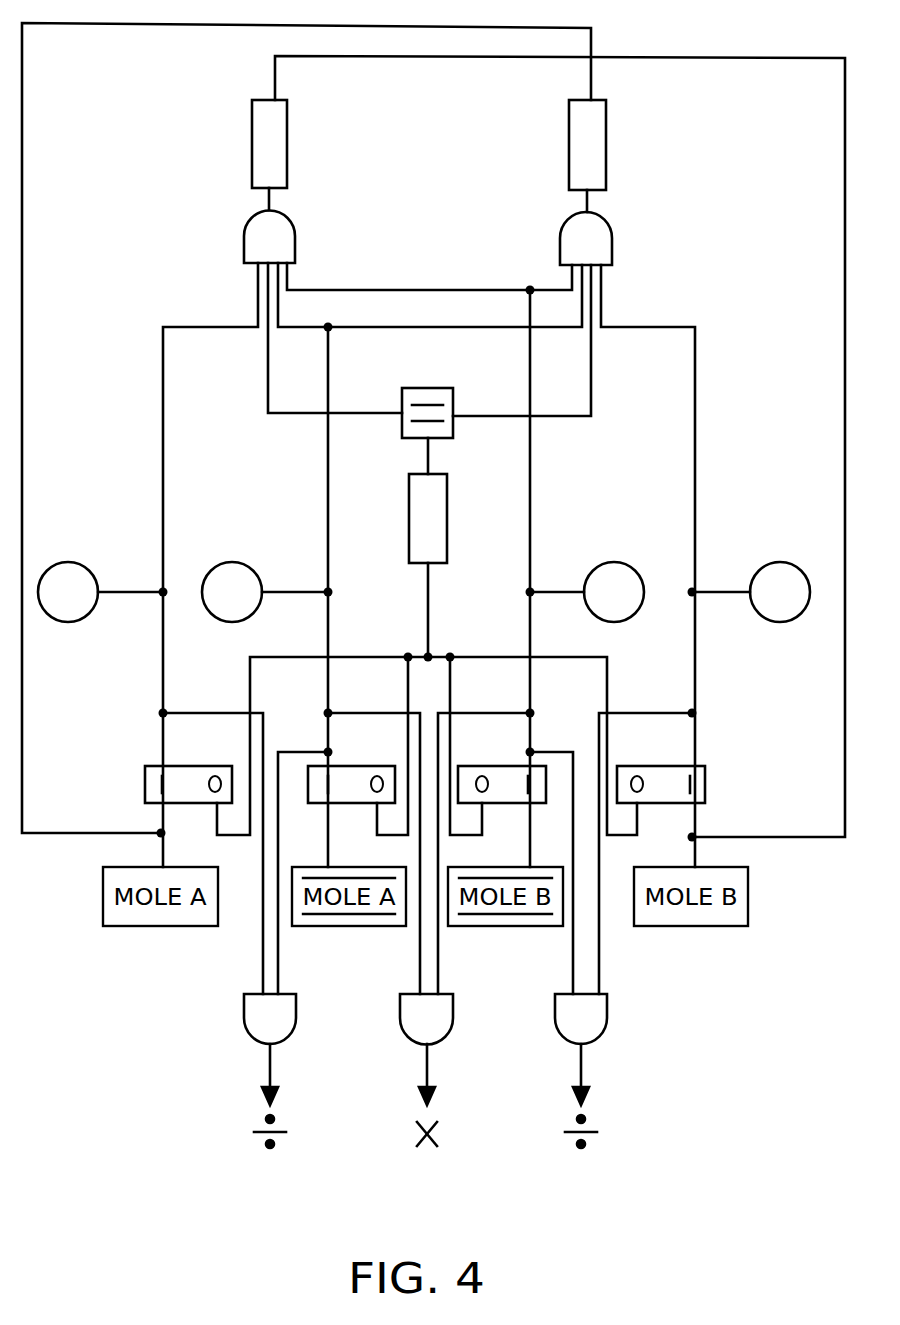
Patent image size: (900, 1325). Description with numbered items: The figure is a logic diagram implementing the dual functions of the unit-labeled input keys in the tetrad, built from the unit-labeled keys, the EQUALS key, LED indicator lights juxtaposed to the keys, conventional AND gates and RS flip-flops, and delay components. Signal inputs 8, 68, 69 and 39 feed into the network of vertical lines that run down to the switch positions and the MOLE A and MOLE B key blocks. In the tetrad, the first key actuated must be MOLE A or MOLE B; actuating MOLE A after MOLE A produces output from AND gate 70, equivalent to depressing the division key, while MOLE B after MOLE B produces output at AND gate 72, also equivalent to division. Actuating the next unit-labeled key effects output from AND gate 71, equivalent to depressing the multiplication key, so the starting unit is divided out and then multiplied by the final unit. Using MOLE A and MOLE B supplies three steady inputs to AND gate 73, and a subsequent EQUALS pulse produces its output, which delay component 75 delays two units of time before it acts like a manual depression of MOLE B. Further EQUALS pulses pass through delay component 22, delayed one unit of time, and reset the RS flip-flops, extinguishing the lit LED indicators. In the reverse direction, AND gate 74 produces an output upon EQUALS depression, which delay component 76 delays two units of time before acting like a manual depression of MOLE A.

The delay component 75 is at (269, 144).
The delay component 76 is at (587, 145).
The AND gate 73 is at (269, 238).
The AND gate 74 is at (586, 239).
The delay component 22 is at (428, 518).
The input signal 8 is at (100, 592).
The input signal 68 is at (265, 592).
The input signal 69 is at (587, 592).
The input signal 39 is at (751, 592).
The AND gate 70 is at (270, 1019).
The AND gate 71 is at (426, 1019).
The AND gate 72 is at (581, 1019).